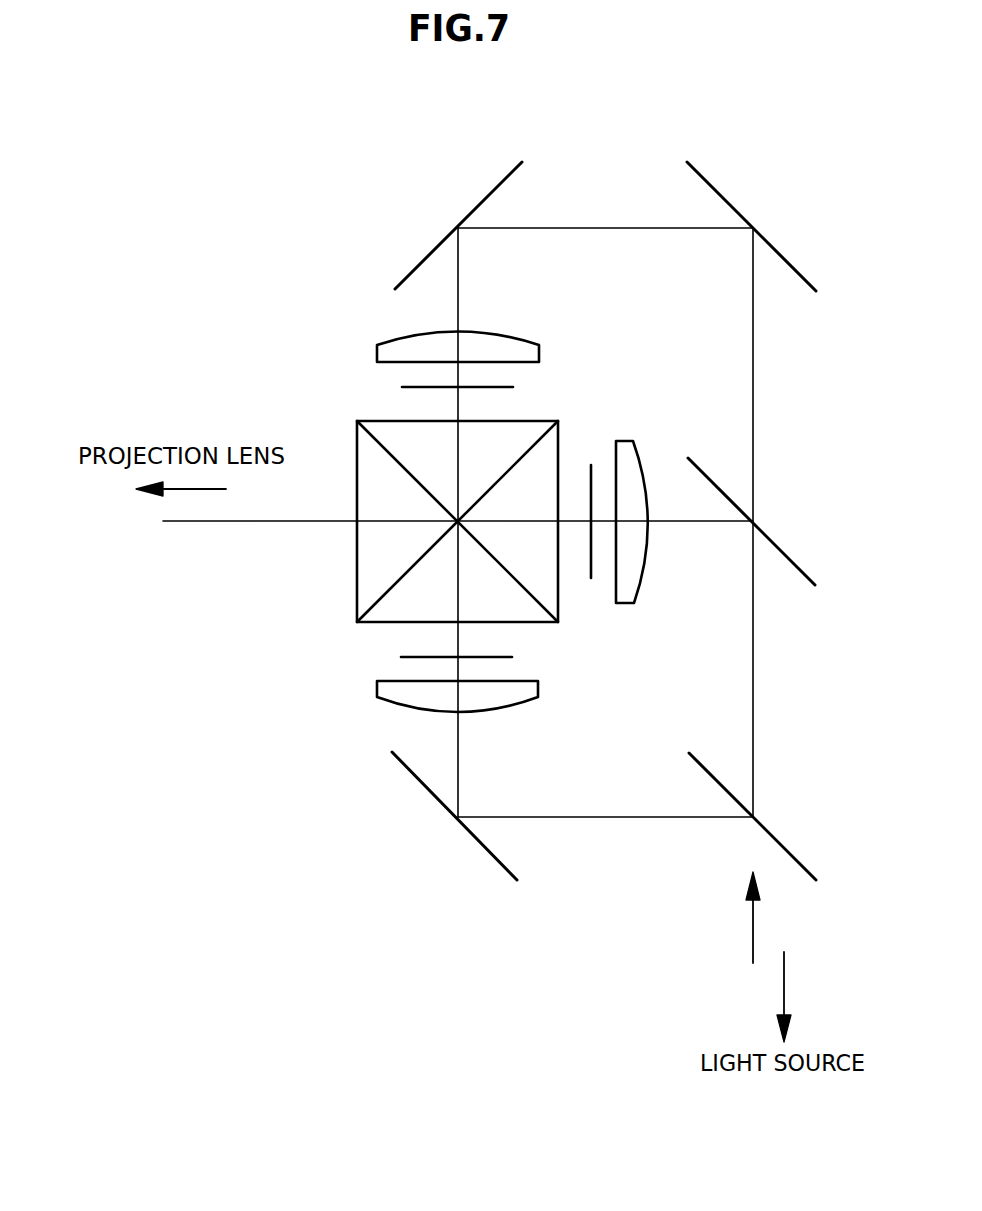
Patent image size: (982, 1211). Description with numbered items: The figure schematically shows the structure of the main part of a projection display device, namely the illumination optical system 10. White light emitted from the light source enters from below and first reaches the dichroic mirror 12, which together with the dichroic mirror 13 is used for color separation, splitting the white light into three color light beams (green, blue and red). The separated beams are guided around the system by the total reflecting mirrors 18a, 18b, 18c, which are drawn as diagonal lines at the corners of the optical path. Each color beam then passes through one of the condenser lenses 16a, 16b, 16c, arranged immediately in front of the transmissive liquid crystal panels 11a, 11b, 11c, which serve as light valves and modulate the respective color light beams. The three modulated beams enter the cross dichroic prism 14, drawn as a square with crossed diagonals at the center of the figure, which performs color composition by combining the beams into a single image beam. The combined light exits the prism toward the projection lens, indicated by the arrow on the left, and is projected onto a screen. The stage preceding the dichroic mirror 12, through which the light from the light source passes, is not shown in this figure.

The illumination optical system 10 is at (281, 155).
The transmissive liquid crystal panel 11a is at (500, 656).
The transmissive liquid crystal panel 11b is at (597, 478).
The transmissive liquid crystal panel 11c is at (402, 387).
The dichroic mirror 12 is at (797, 859).
The dichroic mirror 13 is at (793, 563).
The cross dichroic prism 14 is at (363, 587).
The condenser lens 16a is at (507, 698).
The condenser lens 16b is at (637, 599).
The condenser lens 16c is at (516, 343).
The total reflecting mirror 18a is at (482, 843).
The total reflecting mirror 18b is at (791, 264).
The total reflecting mirror 18c is at (412, 270).